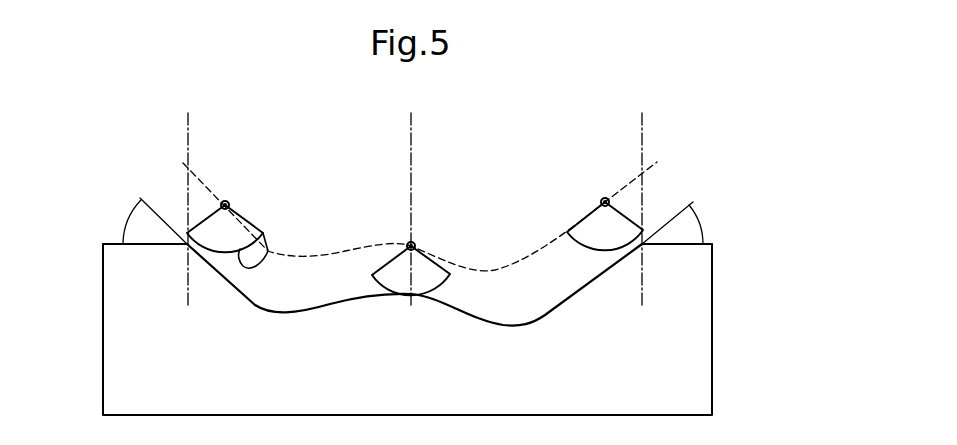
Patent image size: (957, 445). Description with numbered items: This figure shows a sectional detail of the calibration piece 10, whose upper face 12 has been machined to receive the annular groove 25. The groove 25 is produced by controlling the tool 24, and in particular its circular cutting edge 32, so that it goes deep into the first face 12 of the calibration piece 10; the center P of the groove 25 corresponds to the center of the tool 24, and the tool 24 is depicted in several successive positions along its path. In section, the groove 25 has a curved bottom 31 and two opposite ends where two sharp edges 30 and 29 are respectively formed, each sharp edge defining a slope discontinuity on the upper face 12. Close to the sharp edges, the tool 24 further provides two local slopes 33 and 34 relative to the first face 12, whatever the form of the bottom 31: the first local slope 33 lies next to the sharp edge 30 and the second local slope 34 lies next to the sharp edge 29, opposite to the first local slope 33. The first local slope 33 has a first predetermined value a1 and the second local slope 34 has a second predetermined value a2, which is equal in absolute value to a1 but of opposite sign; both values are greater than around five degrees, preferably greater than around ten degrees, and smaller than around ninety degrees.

The calibration piece 10 is at (712, 322).
The upper face 12 is at (705, 243).
The center of the groove P is at (411, 128).
The second sharp edge 30 is at (186, 247).
The first sharp edge 29 is at (643, 246).
The first predetermined value a1 is at (126, 218).
The second predetermined value a2 is at (700, 227).
The first local slope 33 is at (208, 283).
The curved bottom 31 is at (305, 301).
The second local slope 34 is at (598, 270).
The circular cutting edge 32 is at (272, 252).
The tool 24 is at (257, 231).
The annular groove 25 is at (511, 292).